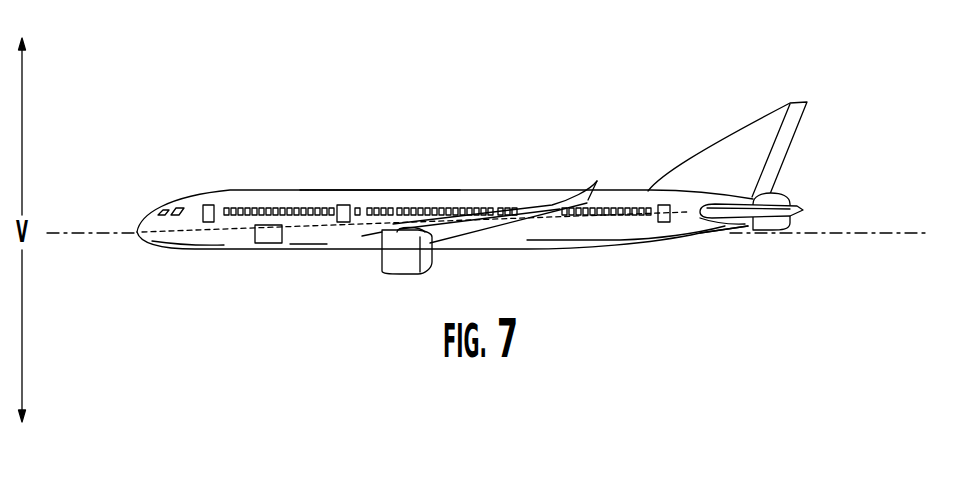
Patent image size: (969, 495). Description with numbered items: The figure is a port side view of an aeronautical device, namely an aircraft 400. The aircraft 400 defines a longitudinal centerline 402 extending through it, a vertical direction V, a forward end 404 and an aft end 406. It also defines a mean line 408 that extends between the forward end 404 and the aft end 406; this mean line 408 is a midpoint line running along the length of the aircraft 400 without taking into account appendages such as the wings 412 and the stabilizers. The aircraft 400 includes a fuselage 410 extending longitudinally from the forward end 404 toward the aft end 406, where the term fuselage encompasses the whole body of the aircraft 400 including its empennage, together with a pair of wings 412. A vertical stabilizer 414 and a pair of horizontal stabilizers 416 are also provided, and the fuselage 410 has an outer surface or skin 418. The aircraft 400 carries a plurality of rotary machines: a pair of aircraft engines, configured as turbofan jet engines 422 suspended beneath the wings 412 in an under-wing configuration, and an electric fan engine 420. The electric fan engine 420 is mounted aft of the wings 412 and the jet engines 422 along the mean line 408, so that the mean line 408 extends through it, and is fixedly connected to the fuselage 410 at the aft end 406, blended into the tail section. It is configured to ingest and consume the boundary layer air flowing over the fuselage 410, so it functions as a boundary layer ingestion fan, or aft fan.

The aircraft 400 is at (190, 140).
The longitudinal centerline 402 is at (877, 235).
The forward end 404 is at (140, 254).
The aft end 406 is at (722, 251).
The mean line 408 is at (687, 212).
The fuselage 410 is at (233, 242).
The wings 412 is at (529, 214).
The vertical stabilizer 414 is at (757, 135).
The horizontal stabilizers 416 is at (753, 228).
The outer surface or skin 418 is at (383, 182).
The electric fan engine 420 is at (789, 184).
The turbofan jet engines 422 is at (389, 279).